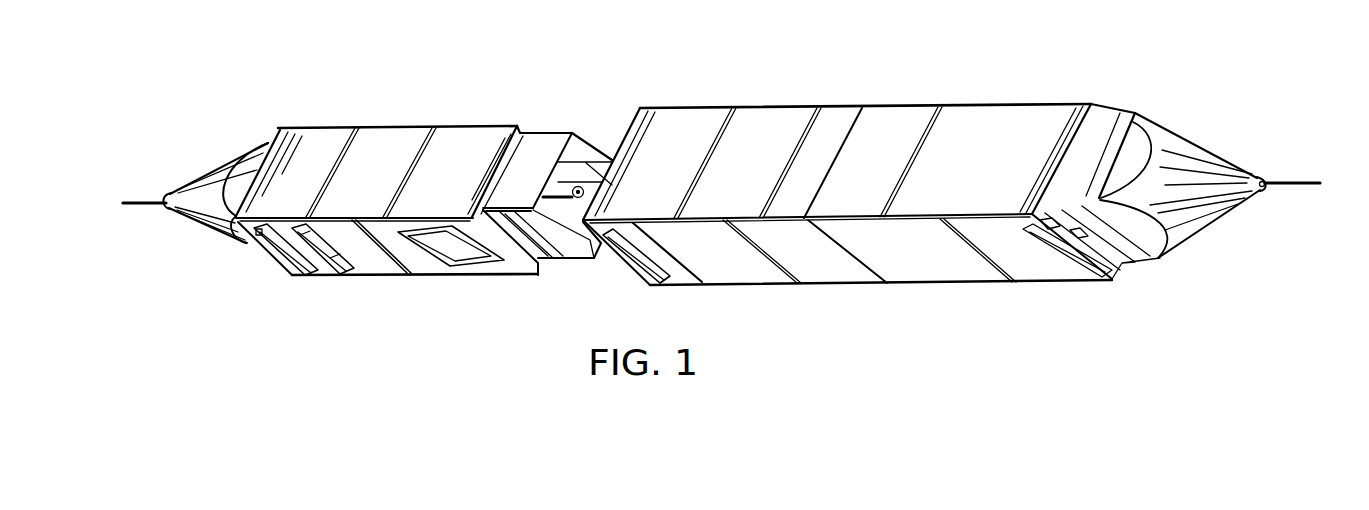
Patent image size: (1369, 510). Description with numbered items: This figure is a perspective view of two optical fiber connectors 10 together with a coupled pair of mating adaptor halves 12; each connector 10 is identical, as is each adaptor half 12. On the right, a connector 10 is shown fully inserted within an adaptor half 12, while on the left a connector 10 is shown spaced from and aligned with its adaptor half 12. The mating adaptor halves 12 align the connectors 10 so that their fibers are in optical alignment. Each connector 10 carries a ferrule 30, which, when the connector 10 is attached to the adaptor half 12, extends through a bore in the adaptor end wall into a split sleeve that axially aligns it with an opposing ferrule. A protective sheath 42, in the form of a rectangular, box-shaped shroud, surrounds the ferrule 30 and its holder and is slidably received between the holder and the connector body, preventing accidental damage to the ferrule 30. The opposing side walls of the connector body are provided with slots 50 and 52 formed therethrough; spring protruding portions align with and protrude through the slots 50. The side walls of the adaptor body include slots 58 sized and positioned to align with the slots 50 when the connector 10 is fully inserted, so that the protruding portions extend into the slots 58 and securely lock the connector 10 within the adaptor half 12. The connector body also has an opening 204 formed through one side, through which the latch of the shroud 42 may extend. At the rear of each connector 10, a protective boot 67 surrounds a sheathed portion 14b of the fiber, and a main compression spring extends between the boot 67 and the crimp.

The optical fiber connector 10 is at (390, 122).
The mating adaptor half 12 is at (701, 100).
The sheathed portion of fiber 14b is at (143, 200).
The ferrule 30 is at (574, 152).
The protective sheath 42 is at (542, 132).
The slot 50 is at (329, 257).
The slot 52 is at (293, 252).
The adaptor slot 58 is at (648, 266).
The protective boot 67 is at (180, 188).
The opening 204 is at (447, 251).